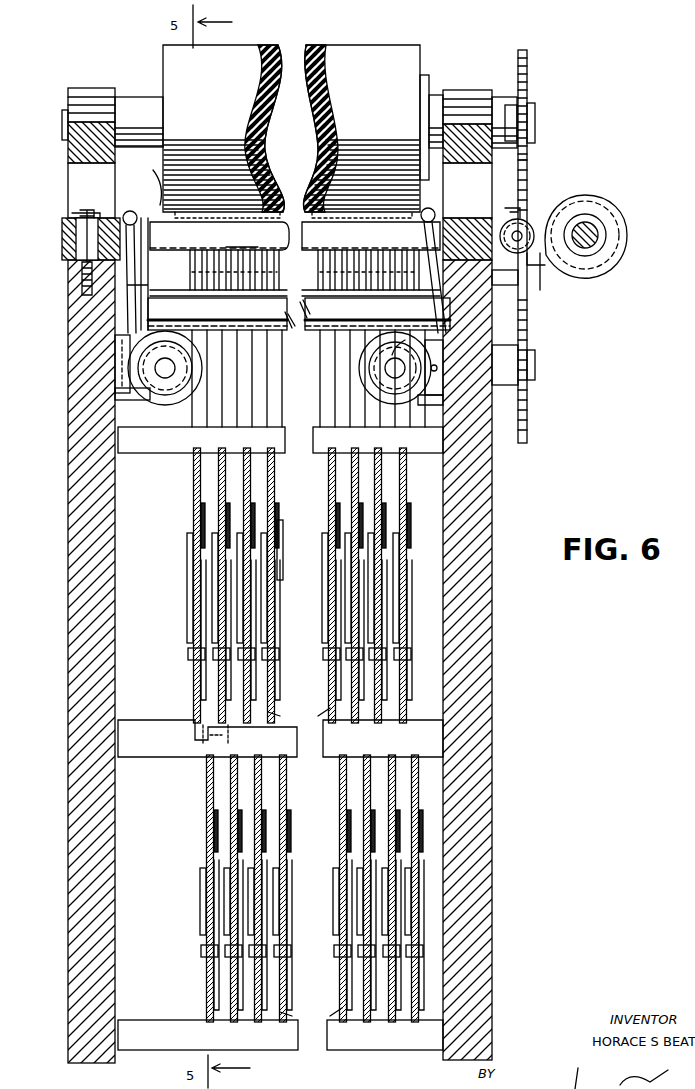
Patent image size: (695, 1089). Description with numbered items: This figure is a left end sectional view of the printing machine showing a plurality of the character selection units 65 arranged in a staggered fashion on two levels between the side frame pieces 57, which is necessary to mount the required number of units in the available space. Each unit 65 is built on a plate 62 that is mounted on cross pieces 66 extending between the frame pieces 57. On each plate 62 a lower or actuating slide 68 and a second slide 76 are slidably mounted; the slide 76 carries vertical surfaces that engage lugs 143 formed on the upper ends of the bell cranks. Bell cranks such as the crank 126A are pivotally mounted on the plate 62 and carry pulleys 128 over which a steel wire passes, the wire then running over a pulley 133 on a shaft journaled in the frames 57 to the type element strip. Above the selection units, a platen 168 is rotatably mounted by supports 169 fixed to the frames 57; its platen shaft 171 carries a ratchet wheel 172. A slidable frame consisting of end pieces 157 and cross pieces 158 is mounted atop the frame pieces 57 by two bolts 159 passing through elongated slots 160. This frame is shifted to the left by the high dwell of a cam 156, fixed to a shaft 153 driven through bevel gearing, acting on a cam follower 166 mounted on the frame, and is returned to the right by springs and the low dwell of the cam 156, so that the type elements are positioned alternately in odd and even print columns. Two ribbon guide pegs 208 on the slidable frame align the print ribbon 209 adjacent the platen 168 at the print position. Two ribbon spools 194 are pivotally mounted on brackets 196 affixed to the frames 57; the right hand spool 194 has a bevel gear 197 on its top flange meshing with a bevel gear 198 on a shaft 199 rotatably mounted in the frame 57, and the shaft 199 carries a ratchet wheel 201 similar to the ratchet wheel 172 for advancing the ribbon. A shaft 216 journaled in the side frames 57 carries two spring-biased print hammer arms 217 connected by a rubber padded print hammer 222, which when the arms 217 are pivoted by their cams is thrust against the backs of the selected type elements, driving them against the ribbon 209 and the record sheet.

The side frame piece 57 is at (68, 590).
The platen 168 is at (372, 60).
The support 169 is at (73, 148).
The elongated slot 160 is at (78, 215).
The end piece 157 is at (110, 213).
The bolt 159 is at (80, 212).
The platen shaft 171 is at (430, 102).
The ratchet wheel 172 is at (528, 92).
The ratchet wheel 201 is at (527, 425).
The cam 156 is at (626, 237).
The shaft 153 is at (589, 222).
The cam follower 166 is at (538, 270).
The cross piece 158 is at (143, 208).
The print ribbon 209 is at (160, 205).
The ribbon guide peg 208 is at (138, 222).
The print hammer 222 is at (242, 239).
The pulley 133 is at (274, 278).
The print hammer arm 217 is at (152, 309).
The shaft 216 is at (302, 325).
The ribbon spool 194 is at (165, 400).
The bracket 196 is at (122, 368).
The bevel gear 197 is at (410, 392).
The bevel gear 198 is at (437, 406).
The shaft 199 is at (418, 393).
The cross piece 66 is at (168, 450).
The plate 62 is at (266, 448).
The second slide 76 is at (280, 518).
The lug 143 is at (283, 548).
The pulley 128 is at (187, 590).
The bell crank 126A is at (190, 650).
The lower or actuating slide 68 is at (272, 712).
The character selection unit 65 is at (233, 730).